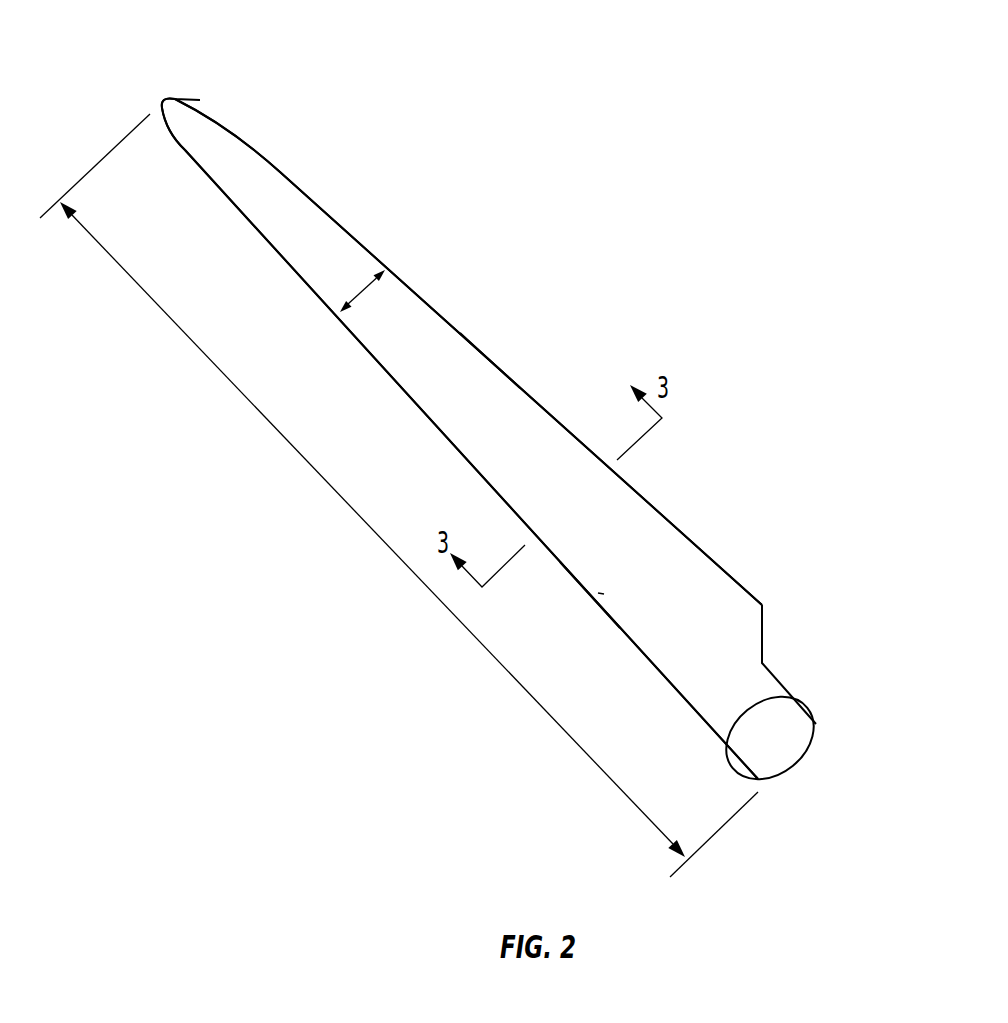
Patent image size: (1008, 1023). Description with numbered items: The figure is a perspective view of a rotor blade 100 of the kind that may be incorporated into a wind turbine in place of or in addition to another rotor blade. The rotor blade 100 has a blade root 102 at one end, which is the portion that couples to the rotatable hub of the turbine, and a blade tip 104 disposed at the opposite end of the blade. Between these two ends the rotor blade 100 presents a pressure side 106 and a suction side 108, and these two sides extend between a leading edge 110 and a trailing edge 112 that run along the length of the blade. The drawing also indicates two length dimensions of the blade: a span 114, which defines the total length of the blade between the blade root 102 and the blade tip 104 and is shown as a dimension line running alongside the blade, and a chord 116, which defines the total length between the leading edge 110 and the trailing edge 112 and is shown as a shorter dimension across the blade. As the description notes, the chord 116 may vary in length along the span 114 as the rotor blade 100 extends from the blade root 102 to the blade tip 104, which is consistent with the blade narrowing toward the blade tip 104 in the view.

The rotor blade 100 is at (684, 280).
The blade root 102 is at (793, 715).
The blade tip 104 is at (163, 100).
The pressure side 106 is at (583, 592).
The suction side 108 is at (487, 385).
The leading edge 110 is at (365, 347).
The trailing edge 112 is at (340, 226).
The span 114 is at (270, 422).
The chord 116 is at (360, 293).